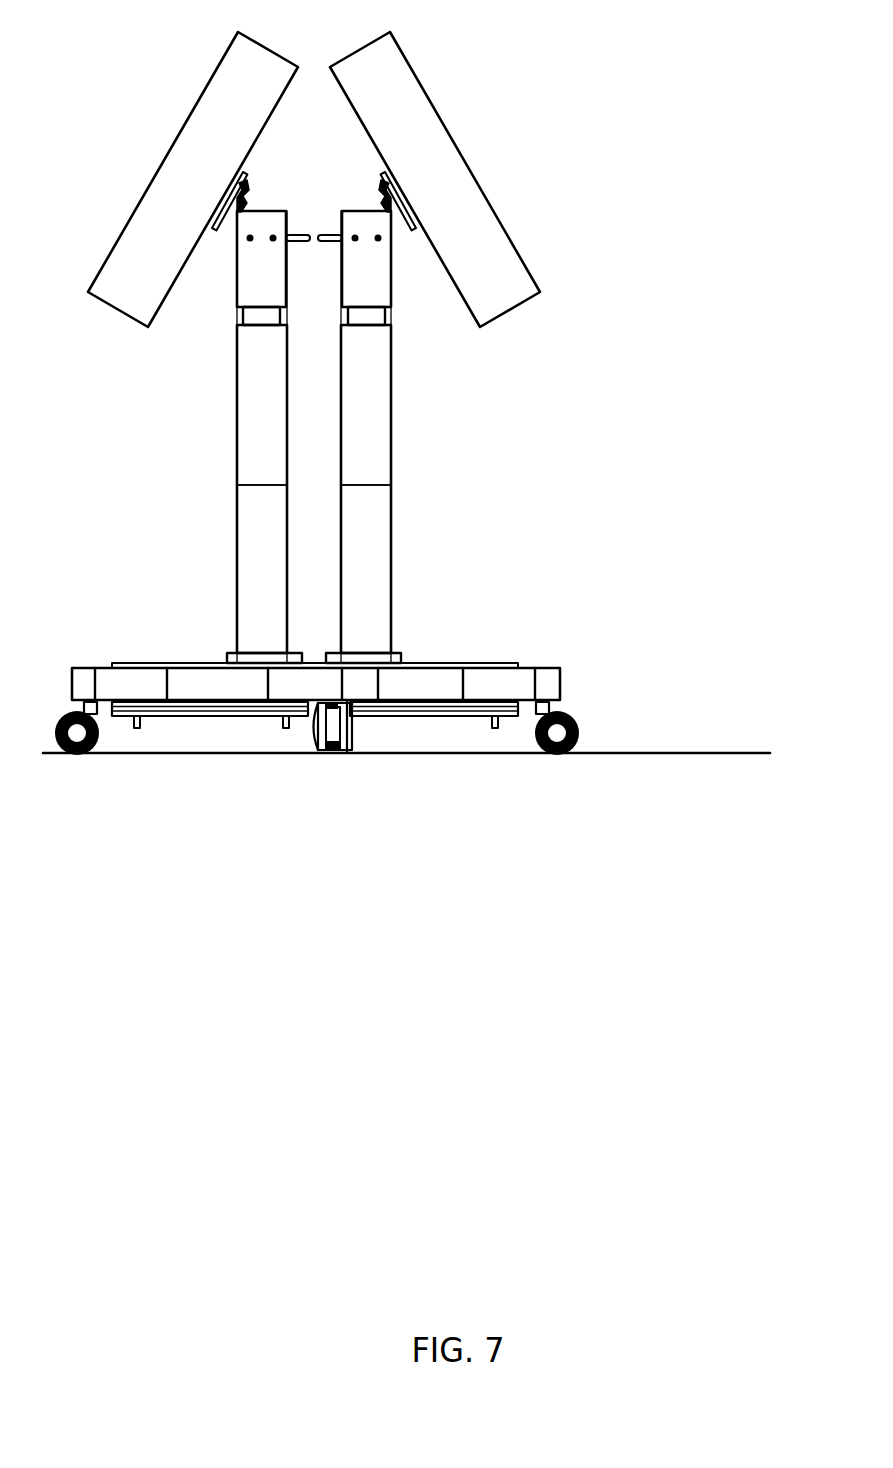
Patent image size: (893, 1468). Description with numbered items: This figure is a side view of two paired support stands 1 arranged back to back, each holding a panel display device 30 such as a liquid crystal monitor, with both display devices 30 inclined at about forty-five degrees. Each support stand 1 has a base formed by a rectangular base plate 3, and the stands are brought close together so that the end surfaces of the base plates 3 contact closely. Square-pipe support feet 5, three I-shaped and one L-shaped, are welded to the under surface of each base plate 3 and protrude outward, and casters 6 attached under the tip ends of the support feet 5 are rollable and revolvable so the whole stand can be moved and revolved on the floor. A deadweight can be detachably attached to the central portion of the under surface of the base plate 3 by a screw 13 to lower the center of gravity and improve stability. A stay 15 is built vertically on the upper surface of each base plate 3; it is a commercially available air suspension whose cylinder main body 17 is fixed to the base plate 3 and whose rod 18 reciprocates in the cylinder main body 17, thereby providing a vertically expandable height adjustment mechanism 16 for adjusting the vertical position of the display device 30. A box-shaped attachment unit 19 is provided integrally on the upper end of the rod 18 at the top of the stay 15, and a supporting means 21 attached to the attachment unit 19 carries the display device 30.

The support stand 1 is at (192, 500).
The base plate 3 is at (172, 662).
The support feet 5 is at (110, 687).
The casters 6 is at (73, 740).
The screw 13 is at (192, 713).
The stay 15 is at (235, 482).
The height adjustment mechanism 16 is at (235, 445).
The cylinder main body 17 is at (250, 537).
The rod 18 is at (243, 315).
The attachment unit 19 is at (247, 268).
The supporting means 21 is at (250, 177).
The panel display device 30 is at (227, 70).